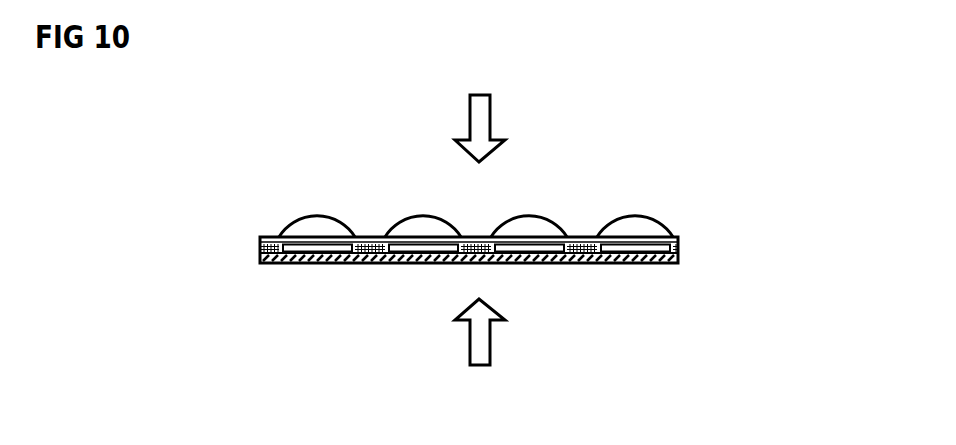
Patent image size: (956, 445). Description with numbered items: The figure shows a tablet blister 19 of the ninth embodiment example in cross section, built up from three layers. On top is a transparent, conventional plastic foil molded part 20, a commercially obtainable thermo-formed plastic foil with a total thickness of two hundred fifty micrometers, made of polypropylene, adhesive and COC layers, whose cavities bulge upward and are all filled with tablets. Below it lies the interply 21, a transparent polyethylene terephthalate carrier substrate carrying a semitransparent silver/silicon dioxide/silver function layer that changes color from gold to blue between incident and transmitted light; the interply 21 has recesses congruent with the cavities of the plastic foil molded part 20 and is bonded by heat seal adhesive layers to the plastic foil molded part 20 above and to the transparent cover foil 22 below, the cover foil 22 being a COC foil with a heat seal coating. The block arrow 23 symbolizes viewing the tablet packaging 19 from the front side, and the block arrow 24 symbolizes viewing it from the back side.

The tablet blister 19 is at (535, 202).
The plastic foil molded part 20 is at (668, 227).
The interply 21 is at (679, 248).
The cover foil 22 is at (678, 268).
The block arrow 23 is at (453, 128).
The block arrow 24 is at (453, 332).